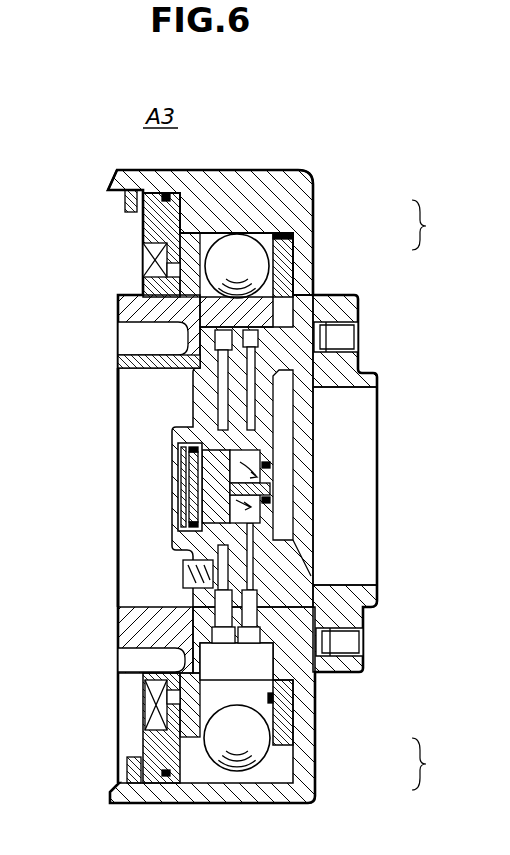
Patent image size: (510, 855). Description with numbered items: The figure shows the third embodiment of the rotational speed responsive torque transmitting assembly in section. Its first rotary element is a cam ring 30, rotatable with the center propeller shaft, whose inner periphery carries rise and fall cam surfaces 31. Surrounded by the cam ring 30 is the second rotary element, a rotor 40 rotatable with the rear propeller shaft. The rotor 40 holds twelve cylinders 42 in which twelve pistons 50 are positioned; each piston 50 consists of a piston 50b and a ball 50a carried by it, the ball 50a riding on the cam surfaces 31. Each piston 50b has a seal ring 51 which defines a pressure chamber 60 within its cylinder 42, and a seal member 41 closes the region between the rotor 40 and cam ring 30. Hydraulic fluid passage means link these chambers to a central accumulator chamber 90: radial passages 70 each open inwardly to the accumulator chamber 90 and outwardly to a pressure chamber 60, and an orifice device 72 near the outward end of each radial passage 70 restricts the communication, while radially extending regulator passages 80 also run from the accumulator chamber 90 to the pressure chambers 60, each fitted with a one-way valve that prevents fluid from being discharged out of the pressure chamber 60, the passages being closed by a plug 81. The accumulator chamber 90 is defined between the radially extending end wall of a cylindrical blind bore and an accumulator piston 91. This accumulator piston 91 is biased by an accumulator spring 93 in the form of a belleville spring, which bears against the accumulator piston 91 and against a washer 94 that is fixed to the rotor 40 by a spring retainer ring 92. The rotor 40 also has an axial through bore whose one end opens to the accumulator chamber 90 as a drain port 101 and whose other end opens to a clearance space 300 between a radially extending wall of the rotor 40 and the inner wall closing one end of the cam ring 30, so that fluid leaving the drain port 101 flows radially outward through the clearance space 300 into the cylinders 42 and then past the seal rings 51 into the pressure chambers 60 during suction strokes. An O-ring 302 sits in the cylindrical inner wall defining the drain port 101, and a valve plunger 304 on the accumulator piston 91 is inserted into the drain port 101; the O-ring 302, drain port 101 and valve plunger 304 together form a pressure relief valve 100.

The cam ring 30 is at (312, 169).
The rise and fall cam surfaces 31 is at (213, 230).
The rotor 40 is at (118, 306).
The seal member 41 is at (150, 232).
The cylinders 42 is at (178, 266).
The pistons 50 is at (433, 495).
The ball 50a is at (275, 262).
The piston 50b is at (305, 283).
The seal ring 51 is at (305, 295).
The pressure chamber 60 is at (322, 322).
The radial passages 70 is at (236, 396).
The orifice device 72 is at (320, 340).
The radially extending regulator passages 80 is at (210, 407).
The bolt 81 is at (130, 359).
The accumulator chamber 90 is at (212, 496).
The accumulator piston 91 is at (183, 474).
The spring retainer ring 92 is at (195, 522).
The accumulator spring 93 is at (180, 451).
The washer 94 is at (186, 511).
The pressure relief valve 100 is at (283, 407).
The drain port 101 is at (272, 487).
The clearance space 300 is at (342, 395).
The O-ring 302 is at (268, 520).
The valve plunger 304 is at (280, 512).